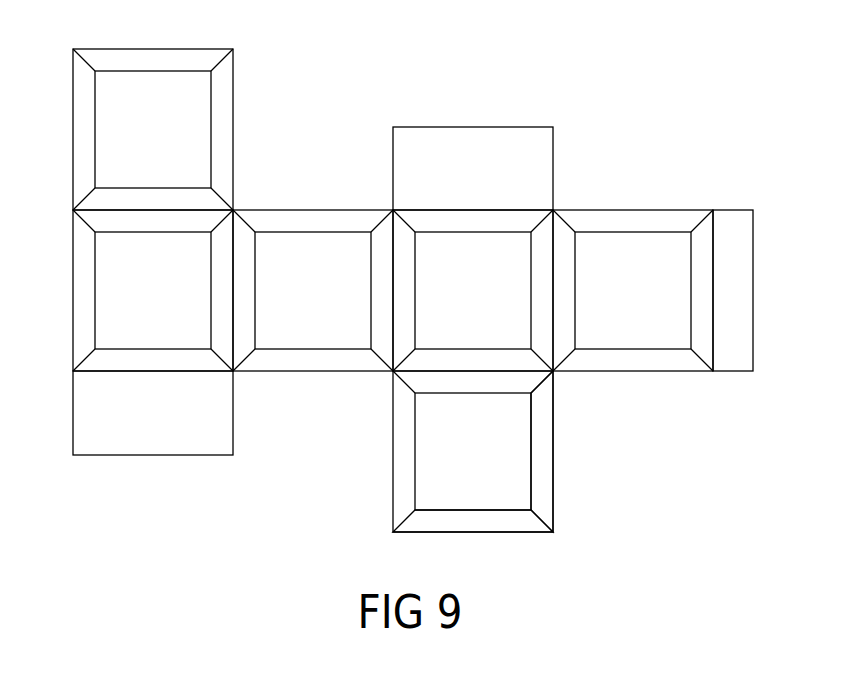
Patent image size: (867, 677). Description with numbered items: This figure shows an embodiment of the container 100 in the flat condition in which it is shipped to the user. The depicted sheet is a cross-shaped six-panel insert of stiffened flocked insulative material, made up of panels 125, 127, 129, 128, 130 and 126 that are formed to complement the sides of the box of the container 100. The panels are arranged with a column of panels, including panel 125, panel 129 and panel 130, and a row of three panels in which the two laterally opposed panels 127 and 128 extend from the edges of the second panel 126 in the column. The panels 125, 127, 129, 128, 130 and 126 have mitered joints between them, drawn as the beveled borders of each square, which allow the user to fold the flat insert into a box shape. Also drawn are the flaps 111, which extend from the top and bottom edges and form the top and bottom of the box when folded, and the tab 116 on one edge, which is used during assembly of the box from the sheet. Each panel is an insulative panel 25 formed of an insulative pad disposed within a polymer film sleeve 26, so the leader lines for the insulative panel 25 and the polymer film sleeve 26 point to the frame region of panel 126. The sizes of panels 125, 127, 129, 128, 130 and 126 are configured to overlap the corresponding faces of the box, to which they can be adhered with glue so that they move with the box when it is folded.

The container 100 is at (576, 177).
The panel 125 is at (135, 141).
The panel 127 is at (135, 302).
The panel 129 is at (295, 302).
The panel 128 is at (455, 302).
The panel 130 is at (615, 301).
The panel 126 is at (510, 481).
The flaps 111 is at (455, 179).
The tab 116 is at (732, 223).
The insulative panel 25 is at (542, 495).
The polymer film sleeve 26 is at (520, 522).